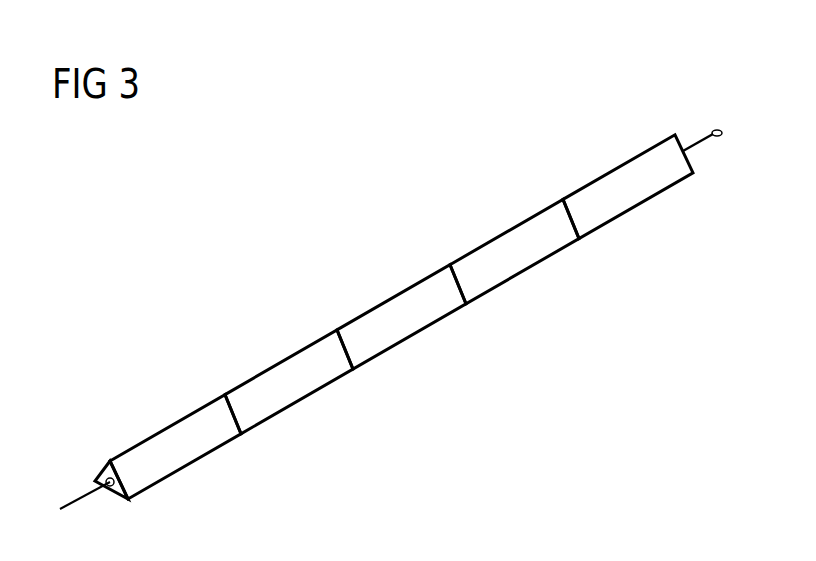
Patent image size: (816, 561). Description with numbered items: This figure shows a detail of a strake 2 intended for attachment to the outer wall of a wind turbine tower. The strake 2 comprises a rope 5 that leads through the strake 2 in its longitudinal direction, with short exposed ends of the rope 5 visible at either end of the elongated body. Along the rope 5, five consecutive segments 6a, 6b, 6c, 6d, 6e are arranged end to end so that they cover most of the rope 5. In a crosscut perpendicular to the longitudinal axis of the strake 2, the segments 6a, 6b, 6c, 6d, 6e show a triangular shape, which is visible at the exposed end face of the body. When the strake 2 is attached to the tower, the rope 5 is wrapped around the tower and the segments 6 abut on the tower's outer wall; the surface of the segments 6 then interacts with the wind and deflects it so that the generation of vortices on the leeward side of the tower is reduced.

The strake 2 is at (331, 258).
The rope 5 is at (80, 492).
The segments 6 is at (610, 208).
The segment 6a is at (197, 430).
The segment 6b is at (290, 375).
The segment 6c is at (397, 312).
The segment 6d is at (508, 248).
The segment 6e is at (618, 183).